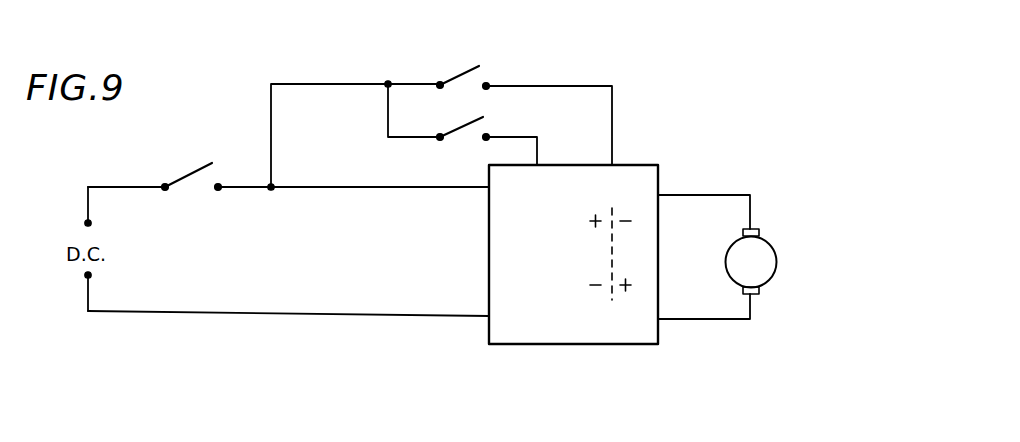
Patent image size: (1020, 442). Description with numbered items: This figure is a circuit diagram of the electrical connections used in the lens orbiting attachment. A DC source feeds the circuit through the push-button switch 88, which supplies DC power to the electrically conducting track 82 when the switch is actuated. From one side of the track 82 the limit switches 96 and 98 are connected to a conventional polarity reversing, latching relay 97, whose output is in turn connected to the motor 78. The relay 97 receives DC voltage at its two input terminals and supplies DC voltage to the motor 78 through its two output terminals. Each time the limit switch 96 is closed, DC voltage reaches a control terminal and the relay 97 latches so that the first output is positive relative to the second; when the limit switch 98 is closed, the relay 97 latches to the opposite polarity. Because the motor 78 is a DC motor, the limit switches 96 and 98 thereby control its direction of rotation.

The motor 78 is at (765, 258).
The electrically conducting track 82 is at (358, 188).
The push-button switch 88 is at (195, 170).
The limit switch 96 is at (463, 71).
The polarity reversing, latching relay 97 is at (563, 345).
The limit switch 98 is at (463, 128).